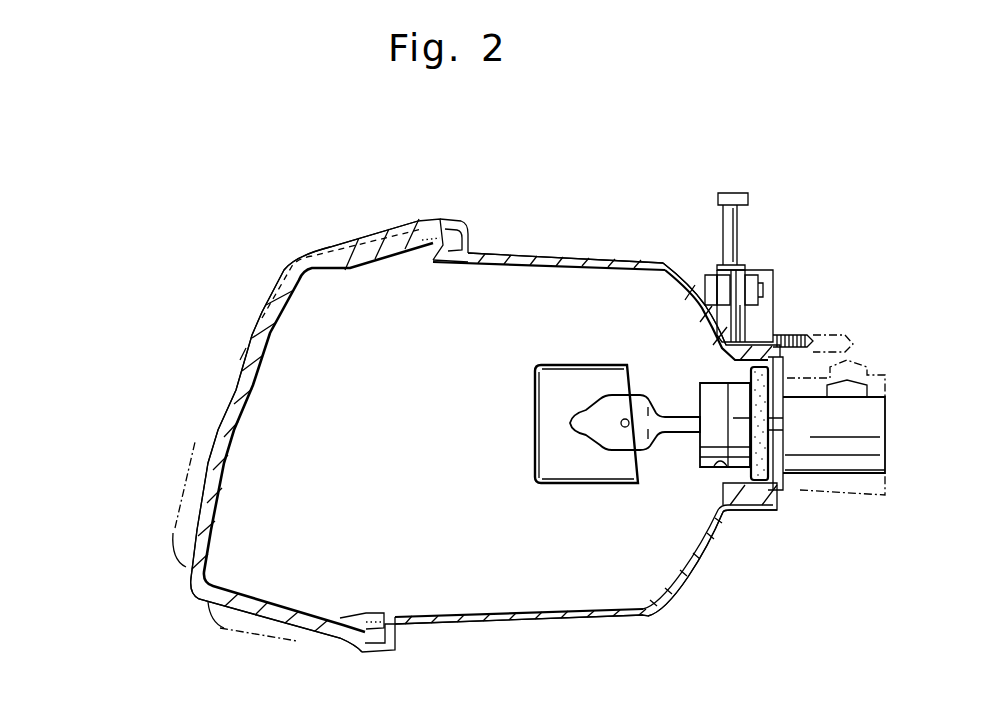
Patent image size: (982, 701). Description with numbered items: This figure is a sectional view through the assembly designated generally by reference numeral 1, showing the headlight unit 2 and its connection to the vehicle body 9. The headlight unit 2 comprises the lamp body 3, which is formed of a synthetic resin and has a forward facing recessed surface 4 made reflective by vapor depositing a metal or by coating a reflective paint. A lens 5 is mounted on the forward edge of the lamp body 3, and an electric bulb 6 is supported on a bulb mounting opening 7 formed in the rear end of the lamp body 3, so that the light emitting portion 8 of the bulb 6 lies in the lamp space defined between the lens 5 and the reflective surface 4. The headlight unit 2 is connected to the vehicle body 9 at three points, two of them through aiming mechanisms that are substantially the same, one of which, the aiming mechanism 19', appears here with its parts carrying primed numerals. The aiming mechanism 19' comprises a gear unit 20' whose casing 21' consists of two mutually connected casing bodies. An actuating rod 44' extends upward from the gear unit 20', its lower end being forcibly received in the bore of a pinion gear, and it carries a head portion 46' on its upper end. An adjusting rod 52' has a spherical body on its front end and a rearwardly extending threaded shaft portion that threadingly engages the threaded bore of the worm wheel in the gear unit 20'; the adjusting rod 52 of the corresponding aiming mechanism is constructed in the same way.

The lamp assembly 1 is at (194, 258).
The headlight unit 2 is at (347, 250).
The lamp body 3 is at (526, 256).
The recessed surface 4 is at (670, 289).
The lens 5 is at (242, 362).
The bulb 6 is at (600, 447).
The bulb mounting opening 7 is at (717, 464).
The light emitting portion 8 is at (626, 428).
The vehicle body 9 is at (723, 323).
The aiming mechanism 19' is at (691, 262).
The gear unit 20' is at (818, 297).
The casing 21' is at (709, 225).
The actuating rod 44' is at (793, 207).
The head portion 46' is at (759, 170).
The adjusting rod 52 is at (882, 324).
The adjusting rod 52' is at (833, 315).